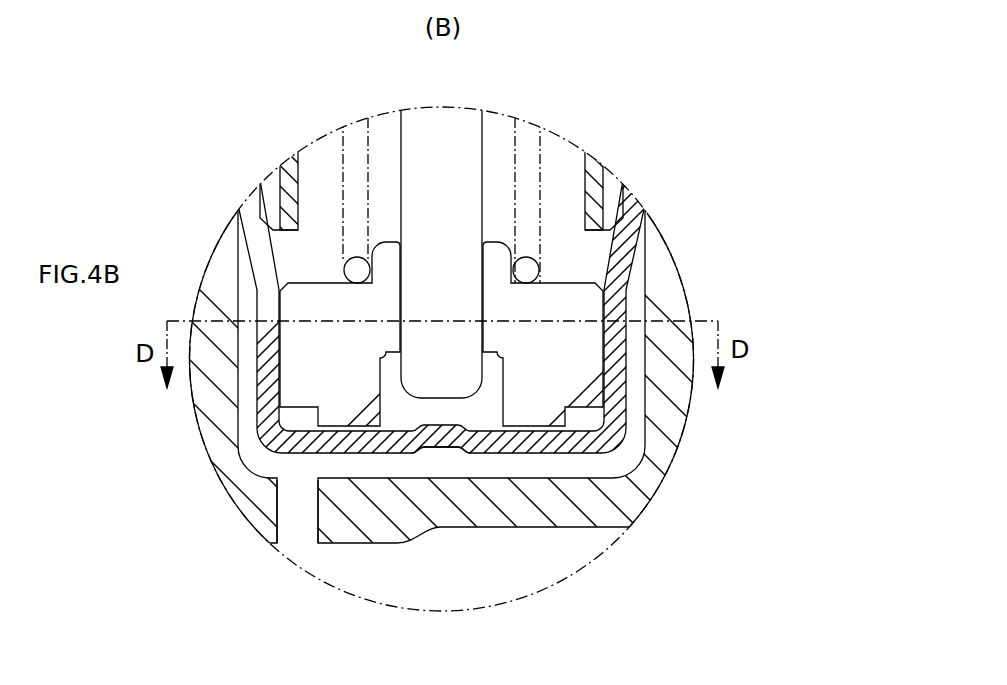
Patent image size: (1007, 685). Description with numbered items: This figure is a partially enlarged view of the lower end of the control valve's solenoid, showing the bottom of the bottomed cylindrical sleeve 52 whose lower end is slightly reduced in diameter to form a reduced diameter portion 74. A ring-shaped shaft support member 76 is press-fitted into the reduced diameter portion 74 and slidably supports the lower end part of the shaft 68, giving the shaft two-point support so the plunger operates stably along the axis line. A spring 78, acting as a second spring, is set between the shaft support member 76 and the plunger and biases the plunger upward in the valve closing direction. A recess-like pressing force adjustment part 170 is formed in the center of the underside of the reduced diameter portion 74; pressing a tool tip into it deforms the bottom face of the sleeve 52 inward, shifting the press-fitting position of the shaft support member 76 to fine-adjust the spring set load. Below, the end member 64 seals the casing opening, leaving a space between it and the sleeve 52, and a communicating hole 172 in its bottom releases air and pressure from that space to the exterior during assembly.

The sleeve 52 is at (237, 220).
The end member 64 is at (503, 527).
The shaft 68 is at (457, 120).
The reduced diameter portion 74 is at (257, 357).
The shaft support member 76 is at (600, 360).
The spring 78 is at (542, 165).
The pressing force adjustment part 170 is at (442, 453).
The communicating hole 172 is at (317, 517).